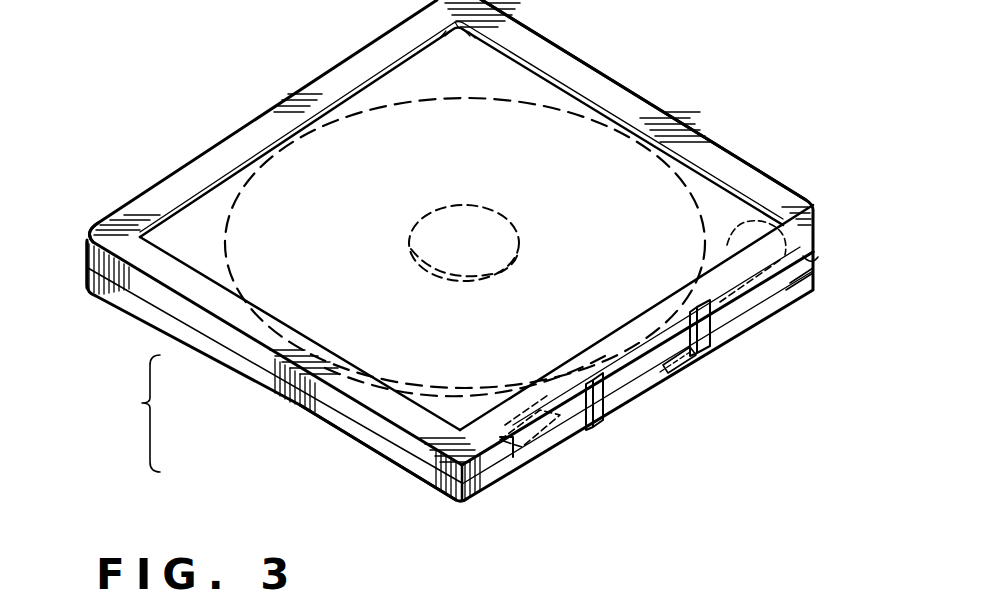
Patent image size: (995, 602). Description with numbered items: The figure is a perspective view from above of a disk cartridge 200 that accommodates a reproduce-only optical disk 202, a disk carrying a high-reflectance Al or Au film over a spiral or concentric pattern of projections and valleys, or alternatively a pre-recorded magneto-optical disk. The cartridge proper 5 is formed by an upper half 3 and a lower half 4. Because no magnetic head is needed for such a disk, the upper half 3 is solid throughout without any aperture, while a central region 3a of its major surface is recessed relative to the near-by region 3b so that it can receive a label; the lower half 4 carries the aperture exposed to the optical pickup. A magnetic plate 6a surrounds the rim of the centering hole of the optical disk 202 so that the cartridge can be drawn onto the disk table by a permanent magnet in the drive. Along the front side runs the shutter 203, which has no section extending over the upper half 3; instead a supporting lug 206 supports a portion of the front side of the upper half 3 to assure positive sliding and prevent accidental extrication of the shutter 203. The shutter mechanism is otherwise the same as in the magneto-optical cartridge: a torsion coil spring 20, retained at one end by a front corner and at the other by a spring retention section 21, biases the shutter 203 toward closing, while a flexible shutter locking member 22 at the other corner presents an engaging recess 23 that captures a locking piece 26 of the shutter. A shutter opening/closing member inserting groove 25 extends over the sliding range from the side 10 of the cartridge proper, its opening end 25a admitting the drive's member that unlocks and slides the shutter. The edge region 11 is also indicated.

The upper half 3 is at (216, 331).
The central region 3a is at (192, 226).
The near-by region 3b is at (252, 153).
The lower half 4 is at (230, 352).
The cartridge proper 5 is at (130, 413).
The magnetic plate 6a is at (516, 234).
The side 10 is at (779, 180).
The bottom edge of cartridge 11 is at (406, 478).
The torsion coil spring 20 is at (531, 447).
The spring retention section 21 is at (610, 404).
The shutter locking member 22 is at (760, 295).
The engaging recess 23 is at (708, 352).
The shutter opening/closing member inserting groove 25 is at (784, 287).
The opening end 25a is at (808, 270).
The locking piece 26 is at (683, 370).
The disk cartridge 200 is at (90, 262).
The reproduce-only optical disk 202 is at (574, 132).
The shutter 203 is at (650, 382).
The supporting lug 206 is at (632, 360).